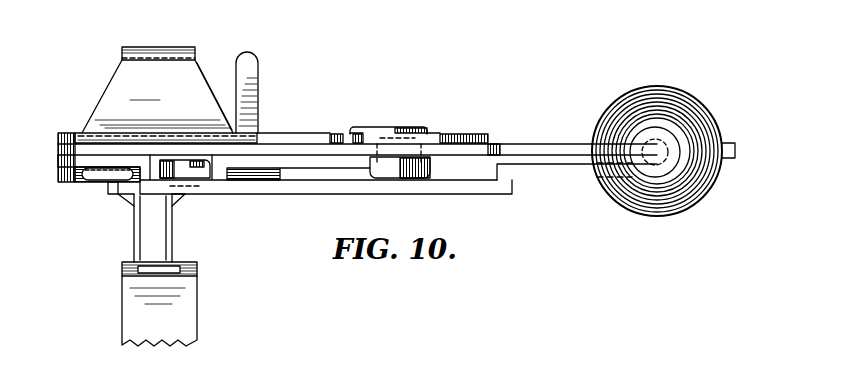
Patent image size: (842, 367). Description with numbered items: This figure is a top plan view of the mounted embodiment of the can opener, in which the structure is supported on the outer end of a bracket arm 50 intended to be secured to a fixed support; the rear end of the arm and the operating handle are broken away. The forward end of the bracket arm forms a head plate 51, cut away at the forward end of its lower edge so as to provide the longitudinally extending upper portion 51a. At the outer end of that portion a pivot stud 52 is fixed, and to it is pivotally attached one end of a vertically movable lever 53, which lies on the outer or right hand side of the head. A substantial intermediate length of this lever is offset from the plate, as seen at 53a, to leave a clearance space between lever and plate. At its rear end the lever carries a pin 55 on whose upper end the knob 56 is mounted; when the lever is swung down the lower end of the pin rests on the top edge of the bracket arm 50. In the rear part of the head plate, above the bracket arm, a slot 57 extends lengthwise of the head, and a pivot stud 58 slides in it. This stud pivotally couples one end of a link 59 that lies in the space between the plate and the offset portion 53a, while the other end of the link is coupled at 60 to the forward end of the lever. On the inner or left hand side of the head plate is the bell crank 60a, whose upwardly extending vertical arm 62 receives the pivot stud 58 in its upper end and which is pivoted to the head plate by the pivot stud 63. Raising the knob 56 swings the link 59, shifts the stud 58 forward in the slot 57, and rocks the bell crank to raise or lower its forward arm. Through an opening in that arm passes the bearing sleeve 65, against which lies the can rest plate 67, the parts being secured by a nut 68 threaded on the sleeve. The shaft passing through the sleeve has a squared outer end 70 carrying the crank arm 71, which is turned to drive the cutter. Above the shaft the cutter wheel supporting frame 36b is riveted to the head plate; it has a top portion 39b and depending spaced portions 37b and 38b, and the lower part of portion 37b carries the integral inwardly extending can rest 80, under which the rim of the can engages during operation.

The cutter wheel supporting frame 36b is at (130, 84).
The depending spaced portion 38b is at (140, 47).
The top portion 39b is at (196, 68).
The depending spaced portion 37b is at (82, 132).
The can rest 80 is at (244, 68).
The head plate 51 is at (262, 150).
The longitudinally extending upper portion 51a is at (58, 147).
The pivot stud 52 is at (90, 176).
The vertically movable lever 53 is at (572, 180).
The offset portion 53a is at (298, 184).
The bracket arm 50 is at (537, 141).
The pin 55 is at (663, 128).
The knob 56 is at (638, 88).
The slot 57 is at (343, 130).
The pivot stud 58 is at (397, 180).
The link 59 is at (341, 165).
The pivot stud 60 is at (205, 165).
The bell crank 60a is at (308, 129).
The vertical arm 62 is at (440, 132).
The pivot stud 63 is at (356, 128).
The bearing sleeve 65 is at (150, 232).
The can rest plate 67 is at (134, 189).
The nut 68 is at (134, 203).
The squared outer end 70 is at (137, 278).
The crank arm 71 is at (190, 330).